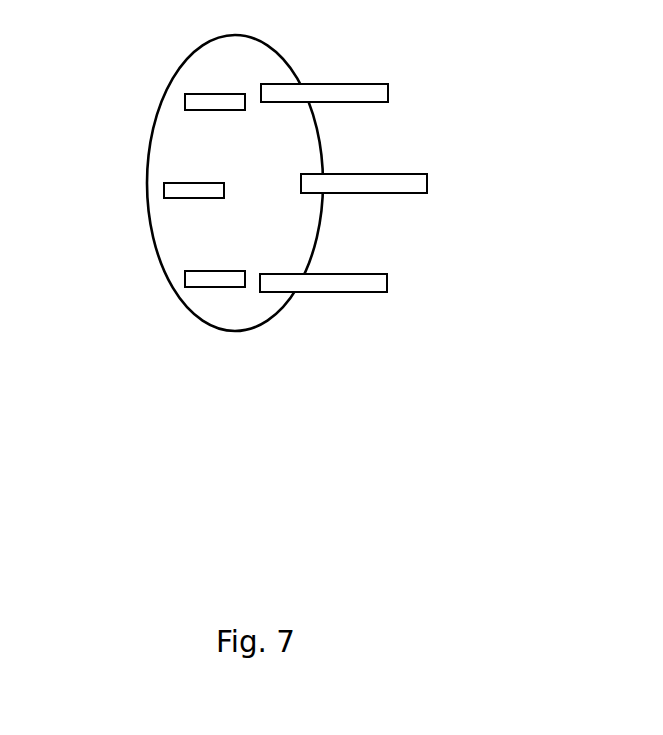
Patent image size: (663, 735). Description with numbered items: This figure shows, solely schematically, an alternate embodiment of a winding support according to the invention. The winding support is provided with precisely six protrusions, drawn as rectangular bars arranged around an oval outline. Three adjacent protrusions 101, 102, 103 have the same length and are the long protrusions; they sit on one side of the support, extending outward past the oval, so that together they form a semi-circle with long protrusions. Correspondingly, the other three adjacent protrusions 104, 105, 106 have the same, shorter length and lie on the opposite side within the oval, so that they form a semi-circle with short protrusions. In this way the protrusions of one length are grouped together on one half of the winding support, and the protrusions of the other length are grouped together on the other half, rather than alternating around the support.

The protrusion 101 is at (323, 84).
The protrusion 102 is at (362, 193).
The protrusion 103 is at (325, 292).
The protrusion 104 is at (215, 287).
The protrusion 105 is at (194, 198).
The protrusion 106 is at (215, 110).